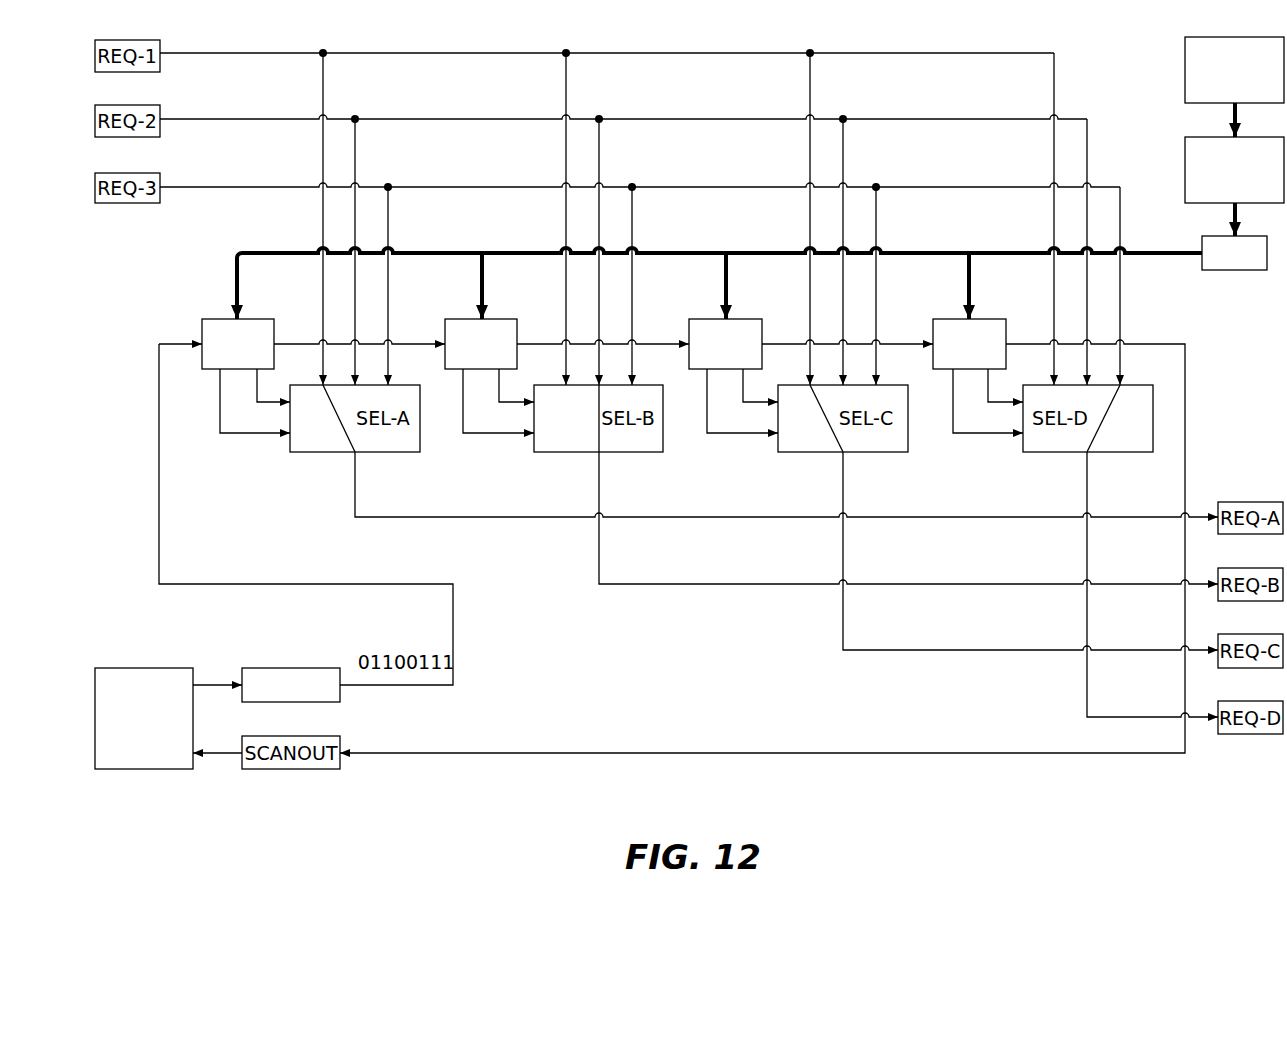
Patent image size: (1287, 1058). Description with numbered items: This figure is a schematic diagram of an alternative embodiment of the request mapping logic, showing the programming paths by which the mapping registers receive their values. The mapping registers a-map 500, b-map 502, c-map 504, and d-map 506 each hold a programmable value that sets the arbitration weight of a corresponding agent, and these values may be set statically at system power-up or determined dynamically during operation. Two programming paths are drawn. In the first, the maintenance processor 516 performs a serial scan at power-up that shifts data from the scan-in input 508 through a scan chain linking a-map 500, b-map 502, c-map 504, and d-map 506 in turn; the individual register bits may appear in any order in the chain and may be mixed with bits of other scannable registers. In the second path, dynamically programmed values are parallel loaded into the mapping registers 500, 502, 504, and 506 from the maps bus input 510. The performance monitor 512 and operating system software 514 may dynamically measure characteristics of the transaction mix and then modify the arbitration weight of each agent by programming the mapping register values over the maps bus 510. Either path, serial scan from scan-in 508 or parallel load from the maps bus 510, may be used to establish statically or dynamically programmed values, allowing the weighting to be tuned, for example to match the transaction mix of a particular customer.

The a-map mapping register 500 is at (257, 319).
The b-map mapping register 502 is at (502, 319).
The c-map mapping register 504 is at (745, 319).
The d-map mapping register 506 is at (988, 319).
The scan-in input 508 is at (258, 668).
The maps bus input 510 is at (1257, 270).
The performance monitor 512 is at (1185, 79).
The operating system software 514 is at (1185, 176).
The maintenance processor 516 is at (162, 668).